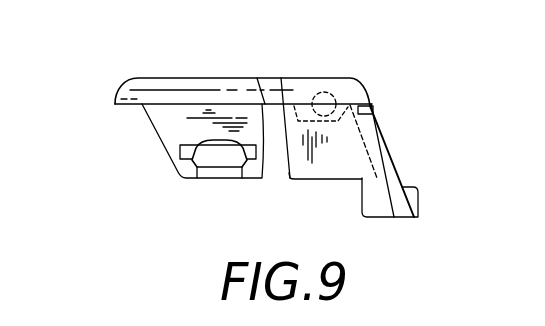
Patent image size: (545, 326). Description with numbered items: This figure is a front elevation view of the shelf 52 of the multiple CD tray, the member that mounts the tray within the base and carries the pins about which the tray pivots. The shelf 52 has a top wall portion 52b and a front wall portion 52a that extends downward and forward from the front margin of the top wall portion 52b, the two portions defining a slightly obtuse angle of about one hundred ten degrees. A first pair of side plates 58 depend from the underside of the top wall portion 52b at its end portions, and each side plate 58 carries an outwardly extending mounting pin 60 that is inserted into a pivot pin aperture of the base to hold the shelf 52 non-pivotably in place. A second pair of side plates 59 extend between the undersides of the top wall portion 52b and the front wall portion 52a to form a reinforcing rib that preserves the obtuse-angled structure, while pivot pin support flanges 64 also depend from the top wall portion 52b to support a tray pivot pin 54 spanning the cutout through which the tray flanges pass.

The shelf 52 is at (172, 78).
The front wall portion 52a is at (383, 156).
The top wall portion 52b is at (282, 90).
The tray pivot pin 54 is at (327, 100).
The first pair of side plates 58 is at (178, 123).
The second pair of side plates 59 is at (318, 170).
The mounting pin 60 is at (218, 158).
The pivot pin support flange 64 is at (345, 117).